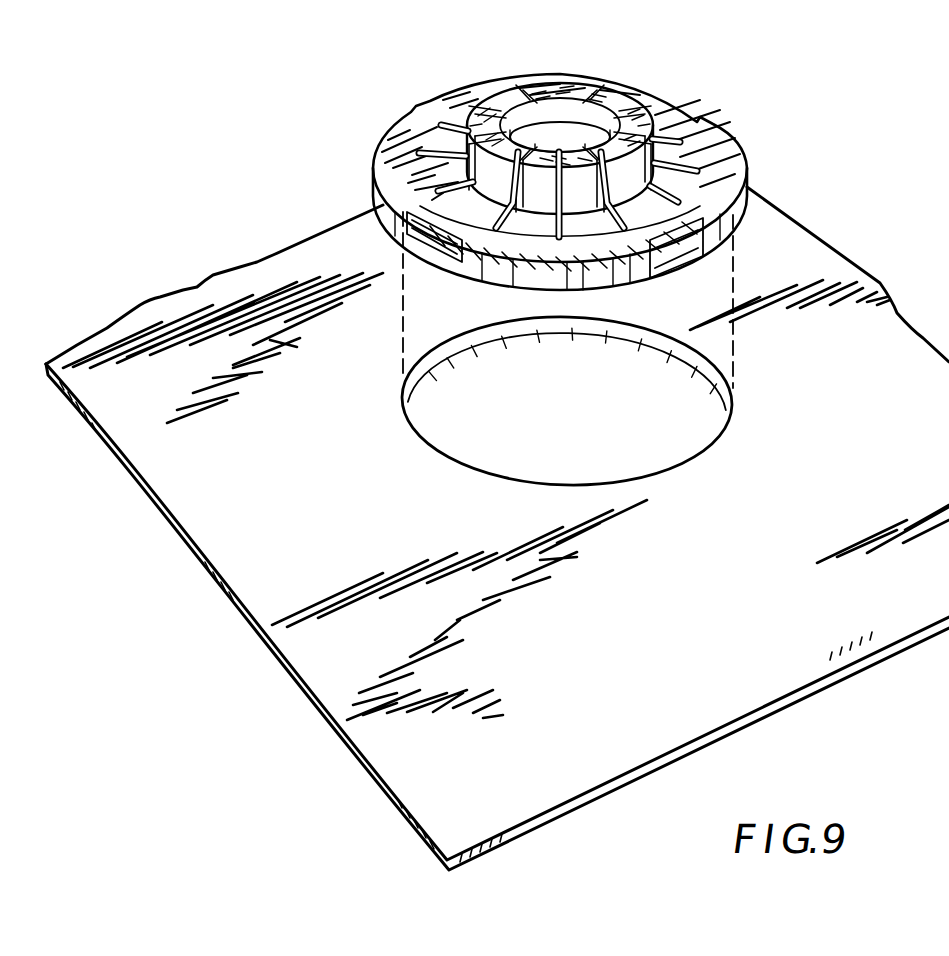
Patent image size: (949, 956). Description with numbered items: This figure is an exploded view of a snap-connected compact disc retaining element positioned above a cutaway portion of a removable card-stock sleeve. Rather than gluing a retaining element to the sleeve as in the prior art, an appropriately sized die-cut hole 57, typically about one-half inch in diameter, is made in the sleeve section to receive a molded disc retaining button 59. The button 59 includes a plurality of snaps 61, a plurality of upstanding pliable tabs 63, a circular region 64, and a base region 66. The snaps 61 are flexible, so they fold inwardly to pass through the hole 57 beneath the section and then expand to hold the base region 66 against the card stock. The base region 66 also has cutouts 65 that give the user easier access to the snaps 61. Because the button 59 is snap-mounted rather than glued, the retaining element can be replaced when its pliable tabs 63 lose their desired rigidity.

The die-cut hole 57 is at (705, 455).
The disc retaining button 59 is at (557, 120).
The snaps 61 is at (430, 254).
The upstanding pliable tabs 63 is at (633, 113).
The circular region 64 is at (631, 273).
The cutouts 65 is at (436, 106).
The base region 66 is at (720, 168).